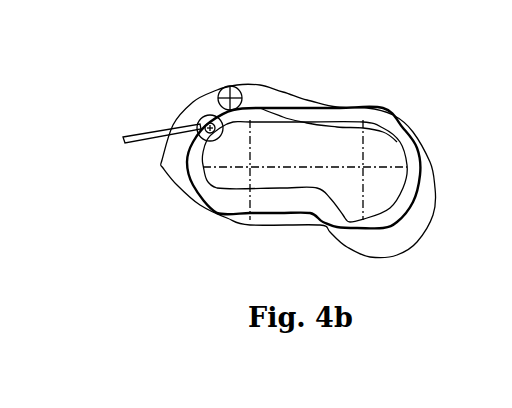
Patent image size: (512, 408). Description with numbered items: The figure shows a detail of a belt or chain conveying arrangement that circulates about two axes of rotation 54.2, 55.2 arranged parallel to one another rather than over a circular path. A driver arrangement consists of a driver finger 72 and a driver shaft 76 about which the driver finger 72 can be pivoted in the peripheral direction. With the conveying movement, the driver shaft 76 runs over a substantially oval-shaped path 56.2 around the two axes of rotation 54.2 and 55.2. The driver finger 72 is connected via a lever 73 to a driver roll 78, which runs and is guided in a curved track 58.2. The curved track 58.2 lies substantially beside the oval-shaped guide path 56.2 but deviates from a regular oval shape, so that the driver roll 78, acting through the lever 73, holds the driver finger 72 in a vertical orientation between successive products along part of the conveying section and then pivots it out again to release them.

The driver finger 72 is at (123, 135).
The lever 73 is at (213, 105).
The driver shaft 76 is at (210, 128).
The driver roll 78 is at (238, 94).
The axis of rotation 54.2 is at (252, 167).
The axis of rotation 55.2 is at (364, 167).
The oval-shaped path 56.2 is at (280, 220).
The curved track 58.2 is at (383, 238).